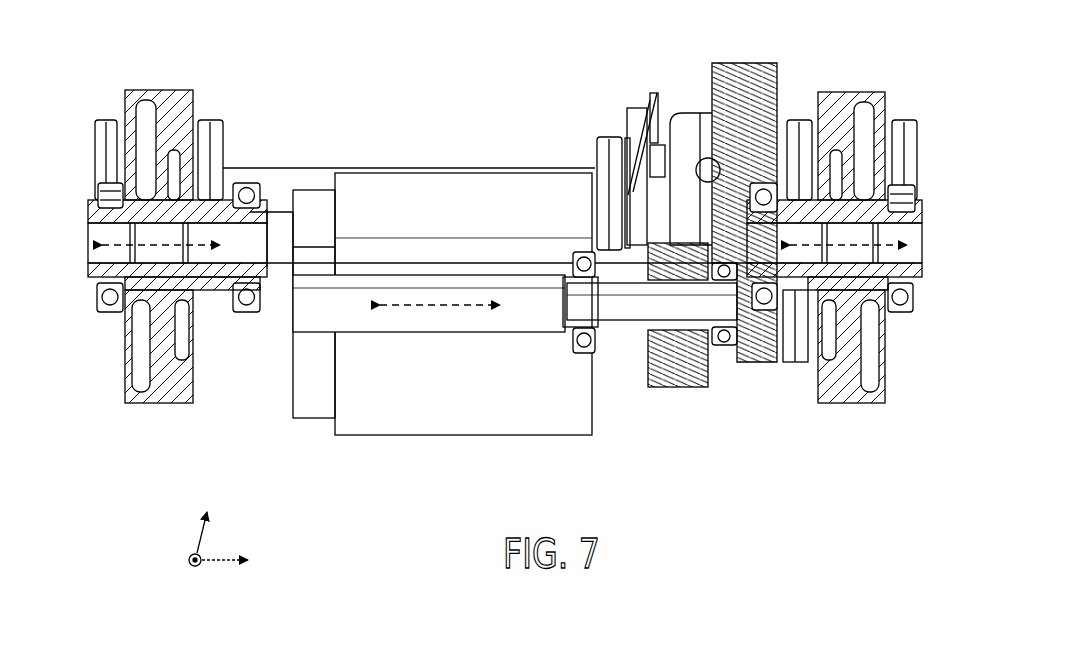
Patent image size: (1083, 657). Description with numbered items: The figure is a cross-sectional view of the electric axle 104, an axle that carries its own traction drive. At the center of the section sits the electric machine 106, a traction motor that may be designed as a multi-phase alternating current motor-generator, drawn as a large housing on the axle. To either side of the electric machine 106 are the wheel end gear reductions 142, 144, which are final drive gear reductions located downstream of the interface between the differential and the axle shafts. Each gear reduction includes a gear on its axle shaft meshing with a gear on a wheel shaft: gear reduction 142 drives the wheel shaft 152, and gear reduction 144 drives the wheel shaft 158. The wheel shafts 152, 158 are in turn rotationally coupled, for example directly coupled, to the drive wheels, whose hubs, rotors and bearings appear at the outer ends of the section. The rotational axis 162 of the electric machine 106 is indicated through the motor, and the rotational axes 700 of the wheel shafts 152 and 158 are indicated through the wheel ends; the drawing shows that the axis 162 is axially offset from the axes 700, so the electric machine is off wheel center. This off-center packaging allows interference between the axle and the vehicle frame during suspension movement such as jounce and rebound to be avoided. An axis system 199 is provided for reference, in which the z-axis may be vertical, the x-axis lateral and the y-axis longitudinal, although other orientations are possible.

The electric axle 104 is at (880, 58).
The electric machine 106 is at (375, 416).
The wheel end gear reduction 142 is at (877, 440).
The wheel end gear reduction 144 is at (150, 440).
The wheel shaft 152 is at (823, 290).
The wheel shaft 158 is at (208, 290).
The rotational axis 162 is at (445, 320).
The axis system 199 is at (250, 527).
The rotational axes 700 is at (162, 228).